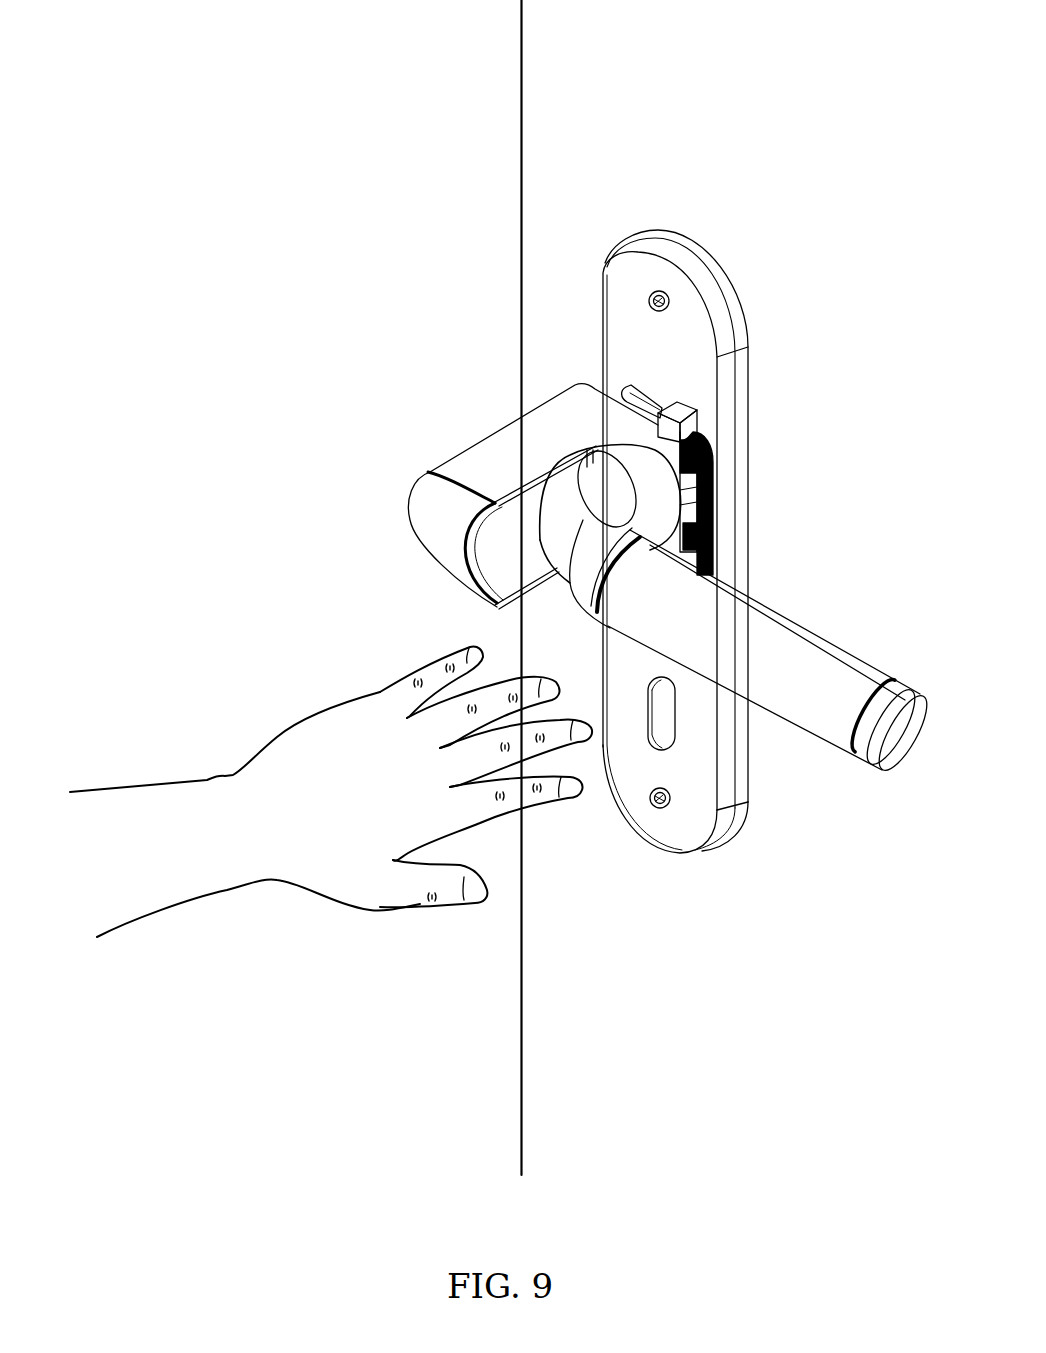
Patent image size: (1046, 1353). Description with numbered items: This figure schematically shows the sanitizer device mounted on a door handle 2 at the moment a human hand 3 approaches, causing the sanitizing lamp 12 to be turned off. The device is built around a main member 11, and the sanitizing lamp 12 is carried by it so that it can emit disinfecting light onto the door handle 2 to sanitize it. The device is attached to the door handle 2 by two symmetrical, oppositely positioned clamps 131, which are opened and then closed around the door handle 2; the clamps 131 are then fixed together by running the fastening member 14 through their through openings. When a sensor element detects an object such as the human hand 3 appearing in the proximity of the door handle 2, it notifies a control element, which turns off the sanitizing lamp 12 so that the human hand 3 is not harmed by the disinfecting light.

The door handle 2 is at (822, 642).
The human hand 3 is at (298, 767).
The main member 11 is at (507, 473).
The sanitizing lamp 12 is at (497, 553).
The fastening member 14 is at (713, 457).
The clamps 131 is at (622, 413).